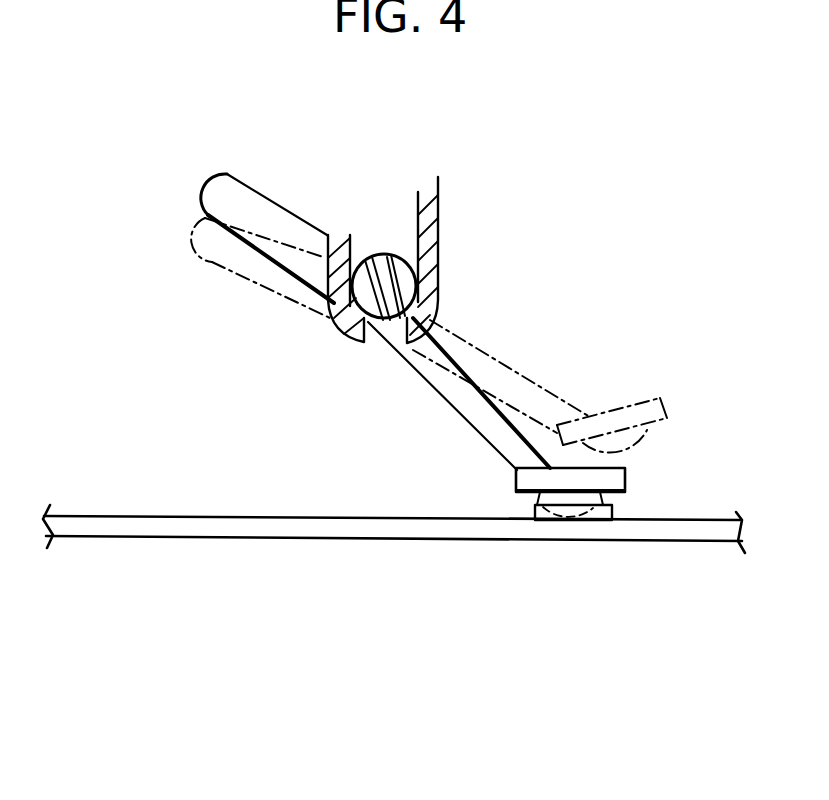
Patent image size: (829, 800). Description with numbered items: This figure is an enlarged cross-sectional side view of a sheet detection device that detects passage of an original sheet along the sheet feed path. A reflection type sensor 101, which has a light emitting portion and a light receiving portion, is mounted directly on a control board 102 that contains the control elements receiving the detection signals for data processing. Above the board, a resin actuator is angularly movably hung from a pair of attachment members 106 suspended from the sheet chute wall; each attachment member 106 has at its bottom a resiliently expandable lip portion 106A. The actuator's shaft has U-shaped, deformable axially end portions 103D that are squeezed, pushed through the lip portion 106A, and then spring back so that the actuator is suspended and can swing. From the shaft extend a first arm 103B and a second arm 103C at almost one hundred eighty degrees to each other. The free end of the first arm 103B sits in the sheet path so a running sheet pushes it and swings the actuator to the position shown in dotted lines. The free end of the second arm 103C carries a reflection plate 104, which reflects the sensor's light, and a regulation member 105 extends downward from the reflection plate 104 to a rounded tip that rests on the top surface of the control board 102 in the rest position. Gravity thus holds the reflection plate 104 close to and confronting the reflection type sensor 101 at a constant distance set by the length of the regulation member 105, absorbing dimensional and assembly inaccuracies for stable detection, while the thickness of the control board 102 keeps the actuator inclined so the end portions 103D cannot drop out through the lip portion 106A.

The reflection type sensor 101 is at (527, 513).
The control board 102 is at (618, 536).
The first arm 103B is at (243, 200).
The second arm 103C is at (442, 397).
The axially end portion 103D is at (398, 268).
The reflection plate 104 is at (617, 479).
The regulation member 105 is at (588, 498).
The attachment member 106 is at (430, 247).
The lip portion 106A is at (368, 333).